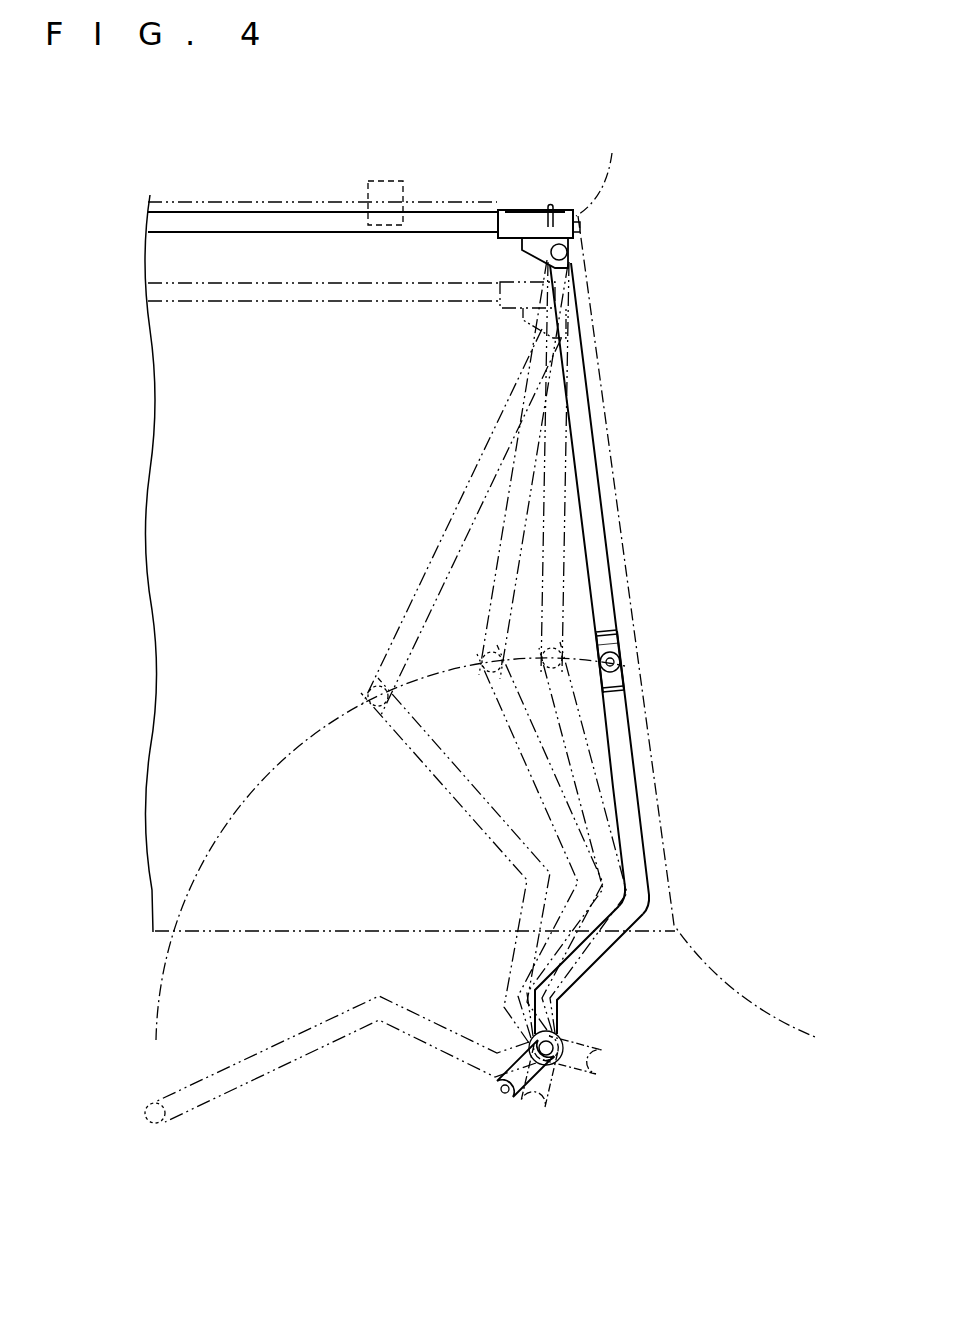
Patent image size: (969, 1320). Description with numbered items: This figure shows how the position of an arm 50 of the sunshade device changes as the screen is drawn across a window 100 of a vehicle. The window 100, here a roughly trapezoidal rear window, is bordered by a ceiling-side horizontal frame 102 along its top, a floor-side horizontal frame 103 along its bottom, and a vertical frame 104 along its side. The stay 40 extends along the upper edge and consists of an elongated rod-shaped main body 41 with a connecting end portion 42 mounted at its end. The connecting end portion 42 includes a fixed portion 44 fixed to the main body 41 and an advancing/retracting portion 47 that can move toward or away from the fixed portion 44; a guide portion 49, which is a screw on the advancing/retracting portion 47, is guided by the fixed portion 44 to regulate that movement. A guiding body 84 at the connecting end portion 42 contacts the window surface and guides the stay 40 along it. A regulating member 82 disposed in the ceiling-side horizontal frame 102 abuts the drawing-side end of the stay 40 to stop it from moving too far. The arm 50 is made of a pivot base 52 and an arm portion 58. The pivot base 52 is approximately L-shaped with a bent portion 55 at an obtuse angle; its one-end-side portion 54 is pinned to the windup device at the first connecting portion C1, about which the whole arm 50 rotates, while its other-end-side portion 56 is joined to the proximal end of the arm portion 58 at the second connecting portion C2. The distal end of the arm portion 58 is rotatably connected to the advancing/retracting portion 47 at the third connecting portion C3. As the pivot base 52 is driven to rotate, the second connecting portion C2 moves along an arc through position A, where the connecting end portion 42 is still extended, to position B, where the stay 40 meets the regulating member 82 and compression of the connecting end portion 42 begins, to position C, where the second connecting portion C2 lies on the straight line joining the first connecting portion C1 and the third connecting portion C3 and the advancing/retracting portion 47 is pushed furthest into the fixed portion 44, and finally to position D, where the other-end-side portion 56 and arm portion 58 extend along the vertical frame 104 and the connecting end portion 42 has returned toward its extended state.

The window 100 is at (170, 206).
The ceiling-side horizontal frame 102 is at (236, 202).
The stay 40 is at (283, 212).
The main body 41 is at (335, 212).
The regulating member 82 is at (385, 181).
The connecting end portion 42 is at (500, 210).
The fixed portion 44 is at (520, 210).
The guiding body 84 is at (550, 205).
The guide portion 49 is at (582, 227).
The advancing/retracting portion 47 is at (537, 263).
The third connecting portion C3 is at (568, 250).
The vertical frame 104 is at (600, 397).
The arm portion 58 is at (597, 452).
The arm 50 is at (614, 555).
The second connecting portion C2 is at (618, 660).
The position A is at (366, 686).
The position B is at (479, 649).
The position C is at (541, 645).
The position D is at (597, 639).
The other-end-side portion 56 is at (646, 823).
The pivot base 52 is at (655, 877).
The bent portion 55 is at (653, 910).
The one-end-side portion 54 is at (590, 968).
The floor-side horizontal frame 103 is at (252, 938).
The first connecting portion C1 is at (548, 1052).